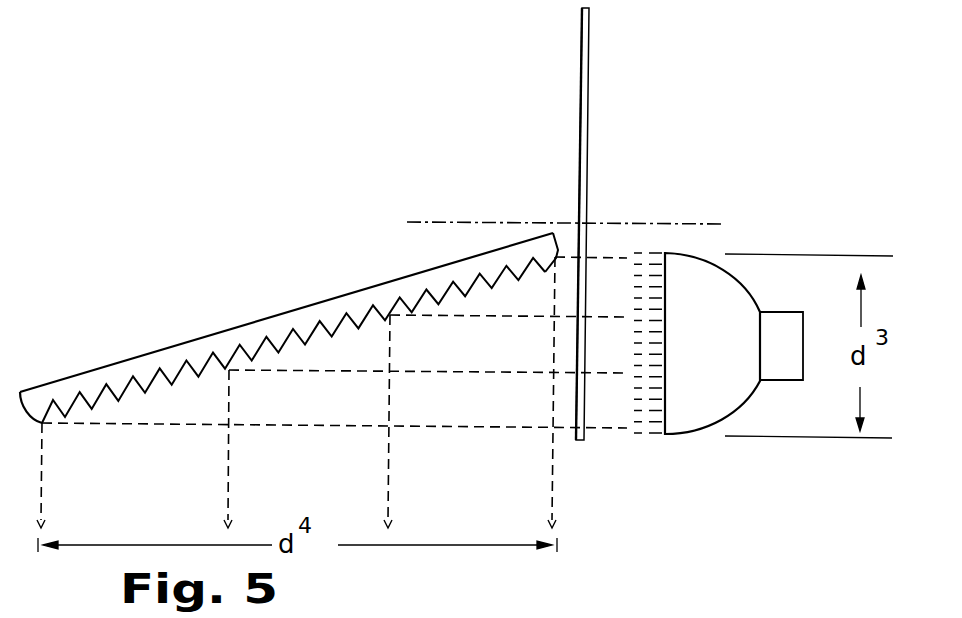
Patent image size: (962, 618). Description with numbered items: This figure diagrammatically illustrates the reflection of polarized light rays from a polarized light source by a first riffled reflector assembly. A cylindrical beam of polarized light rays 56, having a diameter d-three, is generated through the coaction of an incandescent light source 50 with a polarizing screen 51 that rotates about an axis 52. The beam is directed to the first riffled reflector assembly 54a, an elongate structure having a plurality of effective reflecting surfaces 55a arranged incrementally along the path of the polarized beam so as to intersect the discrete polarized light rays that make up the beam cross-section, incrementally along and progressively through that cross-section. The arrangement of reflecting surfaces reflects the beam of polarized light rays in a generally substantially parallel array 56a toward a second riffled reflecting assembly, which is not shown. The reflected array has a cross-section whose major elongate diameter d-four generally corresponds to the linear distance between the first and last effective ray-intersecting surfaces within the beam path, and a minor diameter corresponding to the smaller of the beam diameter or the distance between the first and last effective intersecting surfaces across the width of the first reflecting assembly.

The incandescent light source 50 is at (688, 450).
The polarizing screen 51 is at (575, 88).
The axis 52 is at (628, 222).
The first riffled reflector assembly 54a is at (185, 333).
The effective reflecting surfaces 55a is at (343, 322).
The polarized light rays 56 is at (433, 378).
The substantially parallel array 56a is at (50, 452).